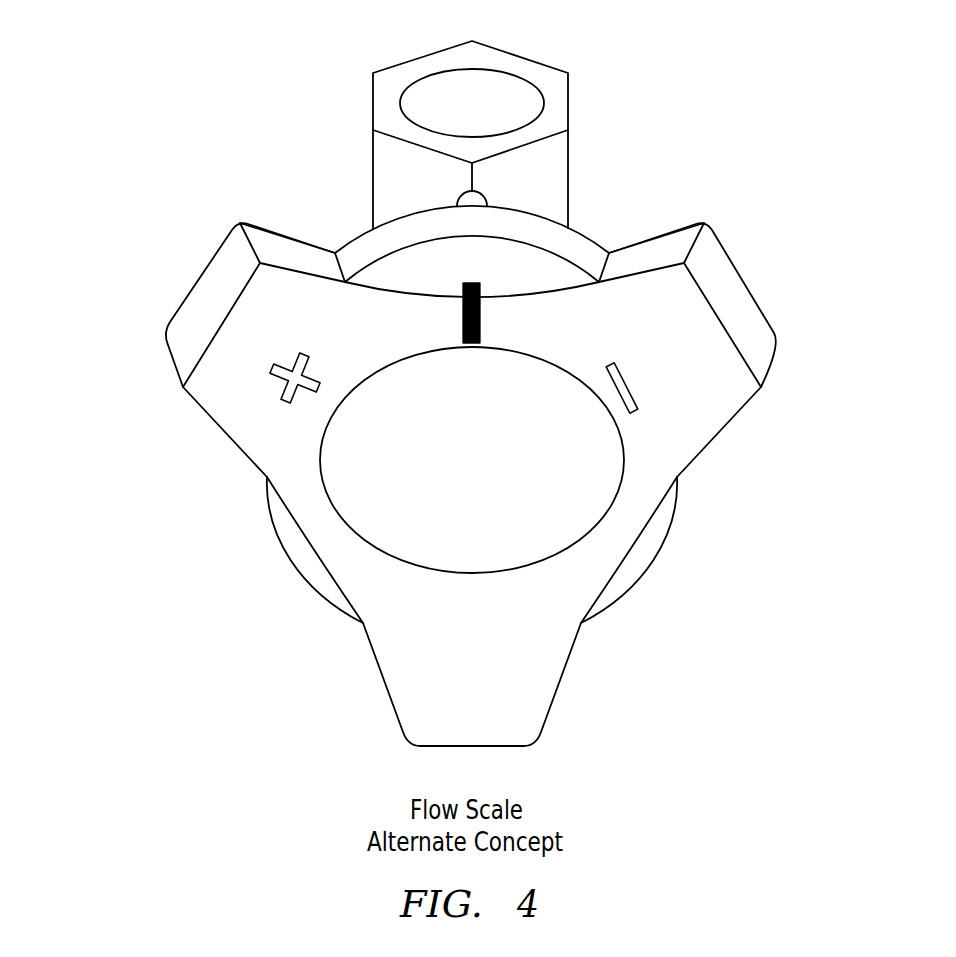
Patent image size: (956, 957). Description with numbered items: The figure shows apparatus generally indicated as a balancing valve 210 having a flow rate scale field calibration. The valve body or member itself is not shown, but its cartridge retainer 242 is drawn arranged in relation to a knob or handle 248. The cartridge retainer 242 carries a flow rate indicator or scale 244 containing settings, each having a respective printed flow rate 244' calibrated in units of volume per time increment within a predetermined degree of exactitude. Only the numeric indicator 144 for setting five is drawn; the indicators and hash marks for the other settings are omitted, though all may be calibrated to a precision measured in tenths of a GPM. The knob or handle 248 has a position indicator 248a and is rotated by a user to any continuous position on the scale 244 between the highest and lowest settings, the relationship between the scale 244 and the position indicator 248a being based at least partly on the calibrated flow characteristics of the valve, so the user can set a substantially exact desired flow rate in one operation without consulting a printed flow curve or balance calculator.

The balancing valve 210 is at (206, 109).
The cartridge retainer 242 is at (560, 160).
The flow rate indicator or scale 244 is at (472, 240).
The numeric indicator 144 is at (497, 260).
The printed flow rate 244' is at (625, 219).
The knob or handle 248 is at (703, 423).
The position indicator 248a is at (452, 323).